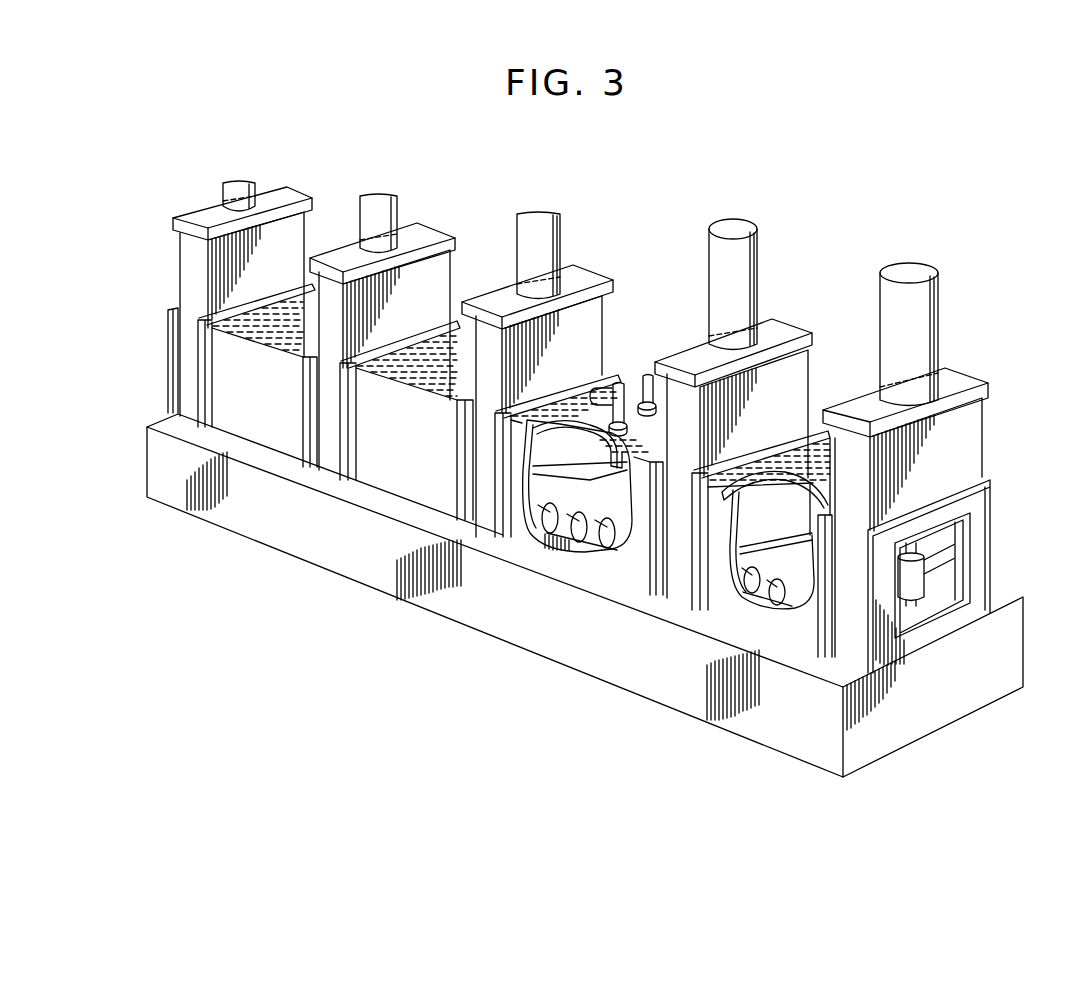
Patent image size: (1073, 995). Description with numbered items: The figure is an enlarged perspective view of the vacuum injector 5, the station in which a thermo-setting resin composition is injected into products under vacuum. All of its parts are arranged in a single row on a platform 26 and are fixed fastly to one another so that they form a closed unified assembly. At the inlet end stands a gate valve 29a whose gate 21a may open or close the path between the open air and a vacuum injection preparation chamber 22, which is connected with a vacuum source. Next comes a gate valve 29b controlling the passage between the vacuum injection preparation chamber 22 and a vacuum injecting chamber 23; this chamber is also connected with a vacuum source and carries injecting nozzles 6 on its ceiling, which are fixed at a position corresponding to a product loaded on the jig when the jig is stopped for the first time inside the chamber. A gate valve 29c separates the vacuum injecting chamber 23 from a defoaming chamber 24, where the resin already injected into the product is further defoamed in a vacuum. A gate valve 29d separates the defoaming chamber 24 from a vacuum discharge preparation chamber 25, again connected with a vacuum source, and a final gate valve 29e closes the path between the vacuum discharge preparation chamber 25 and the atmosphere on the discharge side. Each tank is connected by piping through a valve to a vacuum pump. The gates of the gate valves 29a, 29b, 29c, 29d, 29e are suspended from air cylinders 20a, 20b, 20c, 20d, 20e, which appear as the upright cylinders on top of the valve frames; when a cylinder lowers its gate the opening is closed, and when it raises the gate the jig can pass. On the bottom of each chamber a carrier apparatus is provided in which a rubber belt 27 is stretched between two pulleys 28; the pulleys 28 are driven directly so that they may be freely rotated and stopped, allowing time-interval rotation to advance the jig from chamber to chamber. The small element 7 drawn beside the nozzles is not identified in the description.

The vacuum injector 5 is at (648, 278).
The injecting nozzles 6 is at (629, 383).
The pin with tube 7 is at (614, 374).
The air cylinder 20a is at (935, 298).
The air cylinder 20b is at (755, 253).
The air cylinder 20c is at (563, 231).
The air cylinder 20d is at (398, 205).
The air cylinder 20e is at (239, 196).
The gate 21a is at (927, 598).
The vacuum injection preparation chamber 22 is at (772, 620).
The vacuum injecting chamber 23 is at (537, 531).
The defoaming chamber 24 is at (385, 473).
The vacuum discharge preparation chamber 25 is at (240, 423).
The platform 26 is at (687, 695).
The rubber belt 27 is at (610, 508).
The pulleys 28 is at (580, 533).
The gate valve 29a is at (987, 500).
The gate valve 29b is at (797, 373).
The gate valve 29c is at (492, 303).
The gate valve 29d is at (437, 267).
The gate valve 29e is at (294, 236).